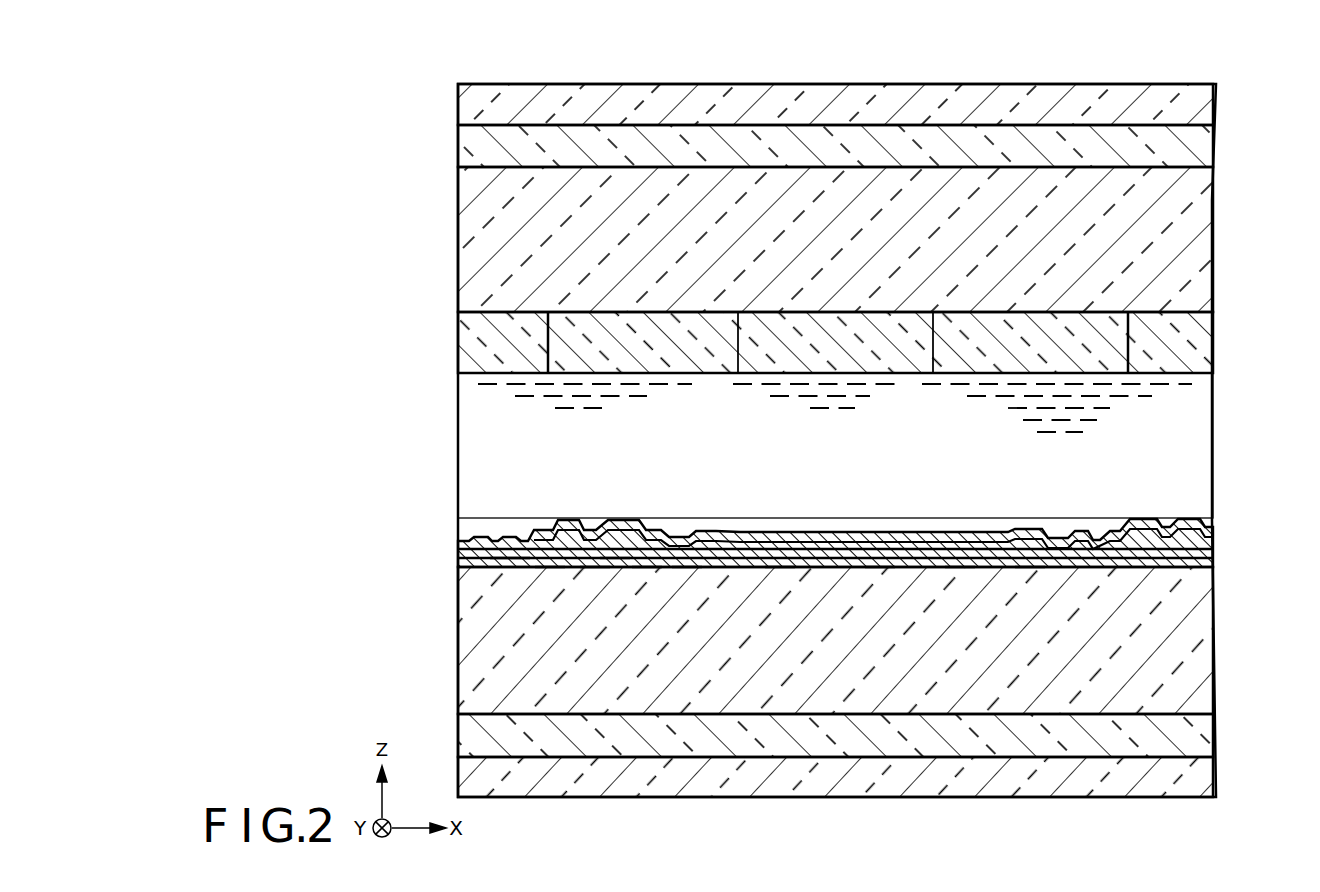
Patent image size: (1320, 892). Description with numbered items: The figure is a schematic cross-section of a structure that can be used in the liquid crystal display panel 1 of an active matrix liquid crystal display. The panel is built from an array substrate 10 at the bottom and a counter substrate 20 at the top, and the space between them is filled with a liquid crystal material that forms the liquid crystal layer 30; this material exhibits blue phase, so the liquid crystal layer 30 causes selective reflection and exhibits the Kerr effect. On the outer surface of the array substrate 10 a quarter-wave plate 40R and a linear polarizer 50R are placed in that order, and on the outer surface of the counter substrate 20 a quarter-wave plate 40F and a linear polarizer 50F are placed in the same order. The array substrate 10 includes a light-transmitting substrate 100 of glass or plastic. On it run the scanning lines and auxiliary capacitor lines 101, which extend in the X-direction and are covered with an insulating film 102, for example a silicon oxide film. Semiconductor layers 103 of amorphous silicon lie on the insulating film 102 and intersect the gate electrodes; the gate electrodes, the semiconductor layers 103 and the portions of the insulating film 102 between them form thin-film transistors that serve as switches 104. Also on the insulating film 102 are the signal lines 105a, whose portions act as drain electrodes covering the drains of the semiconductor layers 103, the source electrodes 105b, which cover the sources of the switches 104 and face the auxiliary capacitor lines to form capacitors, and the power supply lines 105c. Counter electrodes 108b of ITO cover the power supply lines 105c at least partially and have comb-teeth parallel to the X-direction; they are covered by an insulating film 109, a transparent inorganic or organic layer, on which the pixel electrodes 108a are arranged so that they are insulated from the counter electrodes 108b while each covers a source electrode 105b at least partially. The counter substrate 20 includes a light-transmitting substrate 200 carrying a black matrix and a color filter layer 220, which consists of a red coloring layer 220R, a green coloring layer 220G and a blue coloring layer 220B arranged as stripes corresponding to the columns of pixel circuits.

The liquid crystal display panel 1 is at (1118, 72).
The array substrate 10 is at (1214, 598).
The counter substrate 20 is at (1214, 242).
The liquid crystal layer 30 is at (1203, 463).
The quarter-wave plate 40F is at (1213, 145).
The linear polarizer 50F is at (1214, 100).
The quarter-wave plate 40R is at (1214, 740).
The linear polarizer 50R is at (1215, 780).
The light-transmitting substrate 100 is at (1135, 700).
The scanning lines and auxiliary capacitor lines 101 is at (595, 568).
The insulating film 102 is at (550, 568).
The semiconductor layer 103 is at (647, 568).
The switch 104 is at (614, 567).
The signal line 105a is at (507, 567).
The source electrode 105b is at (687, 568).
The power supply line 105c is at (1030, 568).
The pixel electrode 108a is at (780, 568).
The counter electrode 108b is at (960, 568).
The insulating film 109 is at (880, 568).
The light-transmitting substrate 200 is at (540, 173).
The color filter layer 220 is at (681, 47).
The red coloring layer 220R is at (533, 323).
The green coloring layer 220G is at (828, 325).
The blue coloring layer 220B is at (1143, 327).